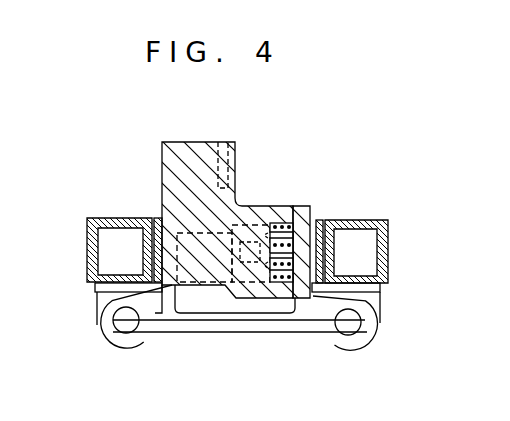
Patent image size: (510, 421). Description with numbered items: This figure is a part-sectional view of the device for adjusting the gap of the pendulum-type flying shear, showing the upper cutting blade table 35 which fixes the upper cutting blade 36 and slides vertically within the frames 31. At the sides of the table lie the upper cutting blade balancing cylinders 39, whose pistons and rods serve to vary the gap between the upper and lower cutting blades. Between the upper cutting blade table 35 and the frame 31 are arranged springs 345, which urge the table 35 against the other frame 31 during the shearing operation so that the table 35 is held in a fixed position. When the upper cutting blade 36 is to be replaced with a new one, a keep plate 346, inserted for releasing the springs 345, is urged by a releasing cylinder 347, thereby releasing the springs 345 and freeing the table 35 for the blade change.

The upper cutting blade table 35 is at (192, 151).
The upper cutting blade 36 is at (237, 160).
The frame 31 is at (87, 262).
The upper cutting blade balancing cylinder 39 is at (101, 336).
The springs 345 is at (287, 222).
The keep plate 346 is at (298, 281).
The releasing cylinder 347 is at (245, 213).